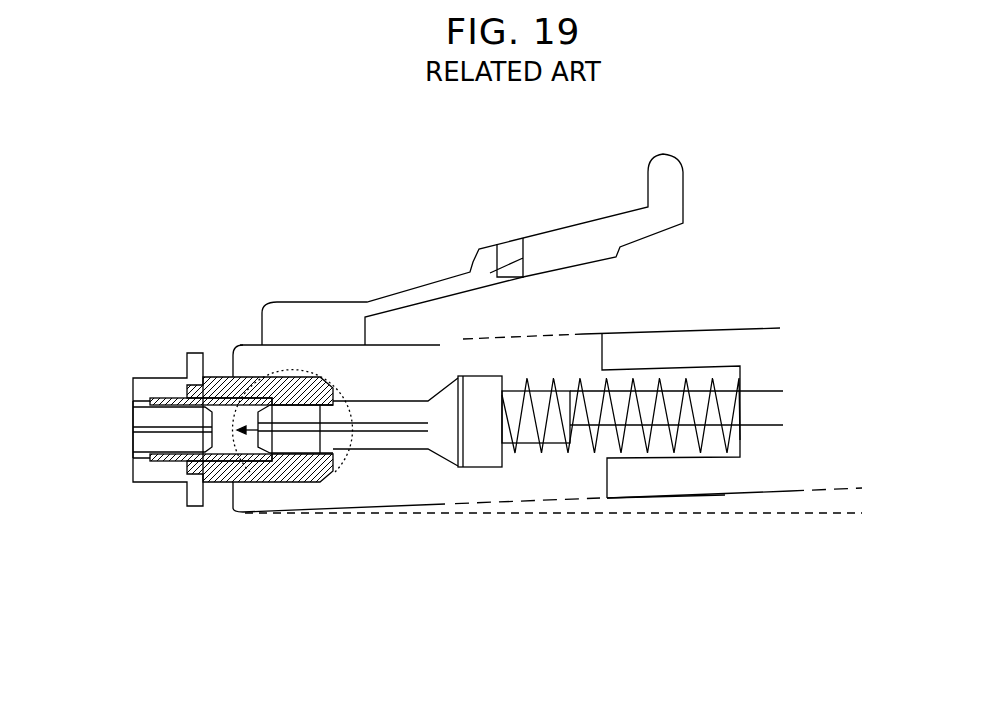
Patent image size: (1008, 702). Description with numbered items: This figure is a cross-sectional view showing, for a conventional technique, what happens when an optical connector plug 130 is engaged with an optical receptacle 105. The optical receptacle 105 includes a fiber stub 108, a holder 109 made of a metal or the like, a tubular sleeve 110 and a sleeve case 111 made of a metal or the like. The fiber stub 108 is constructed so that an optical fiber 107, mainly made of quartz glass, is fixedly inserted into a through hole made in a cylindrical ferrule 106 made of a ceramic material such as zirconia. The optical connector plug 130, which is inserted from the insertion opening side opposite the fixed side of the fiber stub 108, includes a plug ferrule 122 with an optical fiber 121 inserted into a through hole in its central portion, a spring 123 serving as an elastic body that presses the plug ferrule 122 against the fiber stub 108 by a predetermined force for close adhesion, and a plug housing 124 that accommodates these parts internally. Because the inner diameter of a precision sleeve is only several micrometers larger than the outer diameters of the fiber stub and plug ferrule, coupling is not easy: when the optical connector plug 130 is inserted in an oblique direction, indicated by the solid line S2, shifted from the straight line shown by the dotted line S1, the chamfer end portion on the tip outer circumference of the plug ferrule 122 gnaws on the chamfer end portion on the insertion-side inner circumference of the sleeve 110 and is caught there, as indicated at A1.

The optical receptacle 105 is at (158, 492).
The ferrule 106 is at (150, 440).
The optical fiber 107 is at (150, 423).
The fiber stub 108 is at (130, 450).
The holder 109 is at (162, 385).
The sleeve 110 is at (204, 378).
The sleeve case 111 is at (220, 484).
The optical fiber 121 is at (377, 422).
The plug ferrule 122 is at (386, 440).
The spring 123 is at (607, 388).
The plug housing 124 is at (400, 353).
The optical connector plug 130 is at (724, 316).
The gnawing portion A1 is at (335, 472).
The straight line S1 is at (605, 513).
The oblique direction line S2 is at (725, 495).